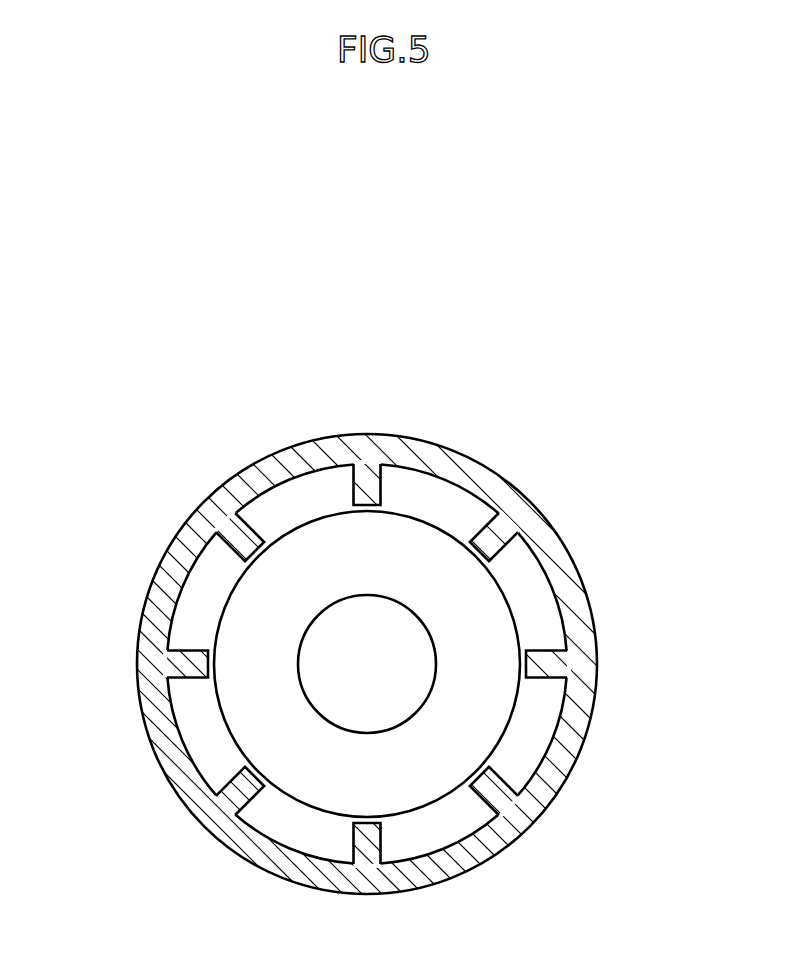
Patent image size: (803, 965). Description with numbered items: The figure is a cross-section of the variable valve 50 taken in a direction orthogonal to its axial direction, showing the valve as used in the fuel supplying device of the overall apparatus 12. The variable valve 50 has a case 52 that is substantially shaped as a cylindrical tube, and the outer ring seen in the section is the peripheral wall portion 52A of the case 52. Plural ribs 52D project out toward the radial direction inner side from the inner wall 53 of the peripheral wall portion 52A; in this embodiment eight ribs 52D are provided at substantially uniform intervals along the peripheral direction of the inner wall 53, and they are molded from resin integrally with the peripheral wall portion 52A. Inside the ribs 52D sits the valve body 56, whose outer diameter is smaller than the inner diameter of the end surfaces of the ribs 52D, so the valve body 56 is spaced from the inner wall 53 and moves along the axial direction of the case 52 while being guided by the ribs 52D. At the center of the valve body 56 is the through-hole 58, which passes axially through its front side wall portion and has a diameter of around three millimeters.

The vehicle seat / device assembly 12 is at (541, 359).
The variable valve 50 is at (468, 428).
The case 52 is at (578, 558).
The peripheral wall portion 52A is at (553, 550).
The ribs 52D is at (360, 493).
The inner wall 53 is at (566, 618).
The valve body 56 is at (444, 808).
The through-hole 58 is at (383, 606).